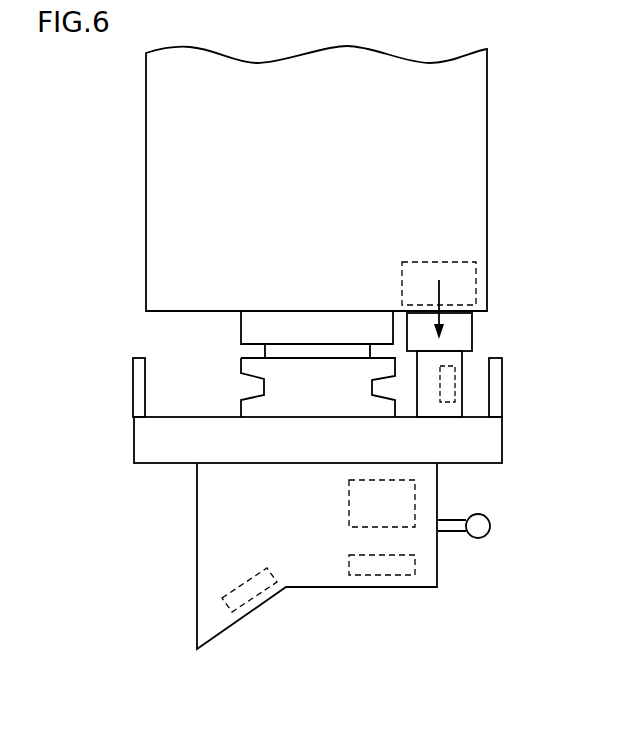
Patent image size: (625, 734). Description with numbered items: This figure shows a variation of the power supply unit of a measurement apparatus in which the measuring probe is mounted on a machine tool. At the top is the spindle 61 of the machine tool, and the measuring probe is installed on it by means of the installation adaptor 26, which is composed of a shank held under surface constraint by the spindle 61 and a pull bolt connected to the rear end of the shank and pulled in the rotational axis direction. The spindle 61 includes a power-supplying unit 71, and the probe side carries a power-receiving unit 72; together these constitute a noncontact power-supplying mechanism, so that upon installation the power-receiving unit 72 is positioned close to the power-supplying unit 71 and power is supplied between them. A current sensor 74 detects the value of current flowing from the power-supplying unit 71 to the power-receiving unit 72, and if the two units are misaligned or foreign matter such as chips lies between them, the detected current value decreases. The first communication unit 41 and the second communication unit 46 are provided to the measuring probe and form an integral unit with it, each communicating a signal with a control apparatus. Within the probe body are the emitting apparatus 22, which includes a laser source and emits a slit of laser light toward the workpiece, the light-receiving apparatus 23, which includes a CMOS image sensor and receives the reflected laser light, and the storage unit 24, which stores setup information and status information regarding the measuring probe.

The spindle 61 is at (150, 138).
The installation adaptor 26 is at (252, 369).
The power-supplying unit 71 is at (455, 262).
The power-receiving unit 72 is at (472, 335).
The current sensor 74 is at (455, 381).
The first communication unit 41 is at (142, 439).
The emitting apparatus 22 is at (226, 612).
The storage unit 24 is at (415, 485).
The light-receiving apparatus 23 is at (415, 565).
The second communication unit 46 is at (484, 526).